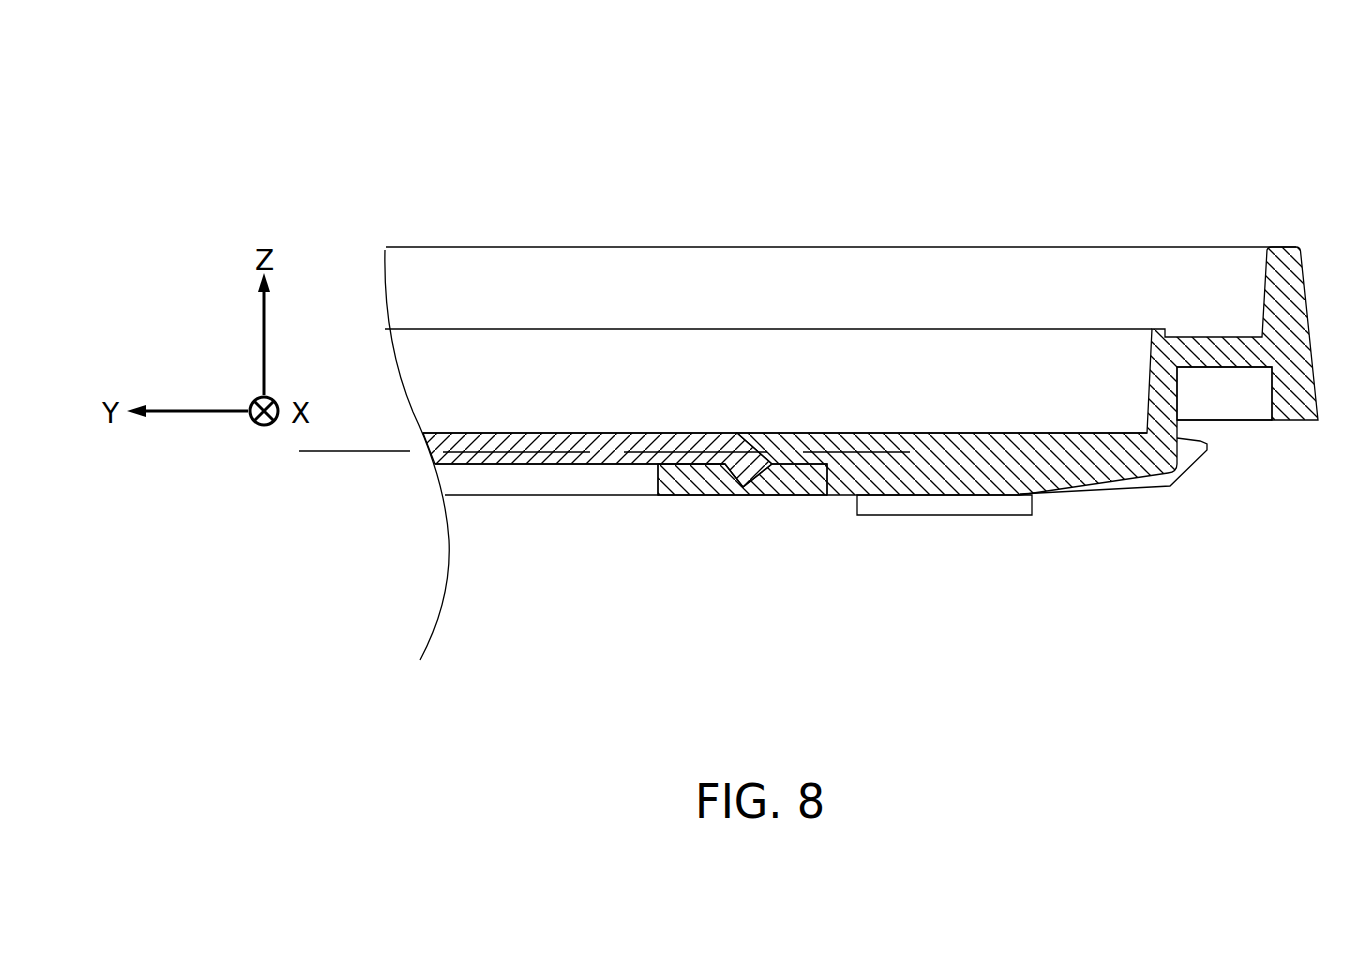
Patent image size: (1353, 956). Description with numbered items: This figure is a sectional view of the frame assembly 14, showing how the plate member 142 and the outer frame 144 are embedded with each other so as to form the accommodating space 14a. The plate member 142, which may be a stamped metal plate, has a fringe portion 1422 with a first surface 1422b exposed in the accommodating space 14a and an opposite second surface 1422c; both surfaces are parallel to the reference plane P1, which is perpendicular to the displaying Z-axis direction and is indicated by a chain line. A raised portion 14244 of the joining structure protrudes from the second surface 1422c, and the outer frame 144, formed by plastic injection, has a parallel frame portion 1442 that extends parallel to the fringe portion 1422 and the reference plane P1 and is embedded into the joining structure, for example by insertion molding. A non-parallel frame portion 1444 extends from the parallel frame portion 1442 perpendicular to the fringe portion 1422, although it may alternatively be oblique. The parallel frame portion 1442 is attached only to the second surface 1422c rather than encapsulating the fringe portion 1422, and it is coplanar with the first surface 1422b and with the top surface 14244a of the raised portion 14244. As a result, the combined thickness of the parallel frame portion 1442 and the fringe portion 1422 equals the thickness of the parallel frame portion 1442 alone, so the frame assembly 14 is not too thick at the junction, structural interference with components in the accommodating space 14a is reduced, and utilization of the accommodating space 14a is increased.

The frame assembly 14 is at (813, 380).
The accommodating space 14a is at (664, 287).
The plate member 142 is at (785, 427).
The fringe portion 1422 is at (785, 427).
The first surface 1422b is at (706, 432).
The second surface 1422c is at (632, 466).
The raised portion 14244 is at (855, 584).
The top surface of the raised portion 14244a is at (788, 497).
The outer frame 144 is at (1027, 476).
The parallel frame portion 1442 is at (970, 497).
The non-parallel frame portion 1444 is at (1240, 393).
The reference plane P1 is at (367, 453).